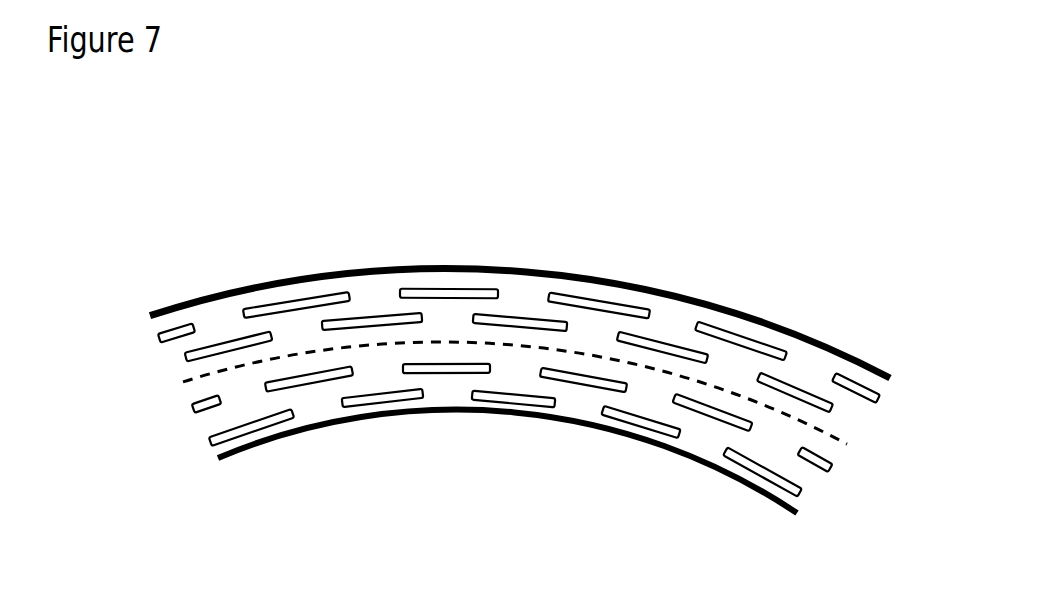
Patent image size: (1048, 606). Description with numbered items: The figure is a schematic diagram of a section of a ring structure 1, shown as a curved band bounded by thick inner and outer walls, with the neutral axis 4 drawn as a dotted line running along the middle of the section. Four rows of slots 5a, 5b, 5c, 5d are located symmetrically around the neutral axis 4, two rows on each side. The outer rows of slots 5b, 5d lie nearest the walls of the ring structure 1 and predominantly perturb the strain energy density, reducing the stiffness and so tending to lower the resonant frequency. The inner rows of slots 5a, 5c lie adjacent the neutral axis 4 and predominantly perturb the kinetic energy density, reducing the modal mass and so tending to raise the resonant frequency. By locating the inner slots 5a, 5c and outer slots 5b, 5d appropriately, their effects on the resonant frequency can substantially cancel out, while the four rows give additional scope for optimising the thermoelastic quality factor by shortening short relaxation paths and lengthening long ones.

The outer wall of curved panel 1 is at (882, 372).
The neutral axis 4 is at (851, 444).
The inner row of slots 5a is at (278, 418).
The outer row of slots 5b is at (172, 330).
The inner row of slots 5c is at (453, 370).
The outer row of slots 5d is at (528, 318).